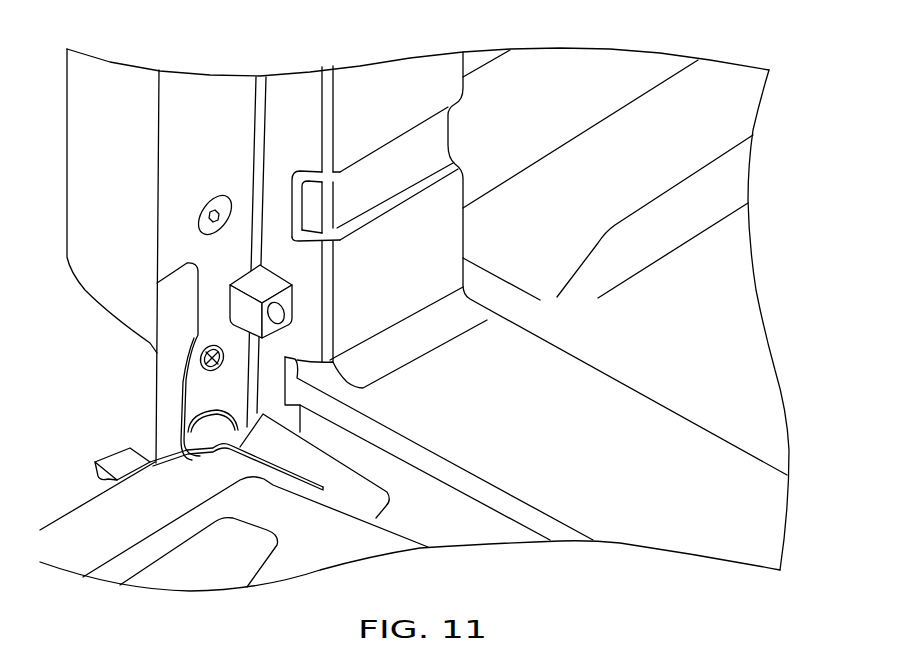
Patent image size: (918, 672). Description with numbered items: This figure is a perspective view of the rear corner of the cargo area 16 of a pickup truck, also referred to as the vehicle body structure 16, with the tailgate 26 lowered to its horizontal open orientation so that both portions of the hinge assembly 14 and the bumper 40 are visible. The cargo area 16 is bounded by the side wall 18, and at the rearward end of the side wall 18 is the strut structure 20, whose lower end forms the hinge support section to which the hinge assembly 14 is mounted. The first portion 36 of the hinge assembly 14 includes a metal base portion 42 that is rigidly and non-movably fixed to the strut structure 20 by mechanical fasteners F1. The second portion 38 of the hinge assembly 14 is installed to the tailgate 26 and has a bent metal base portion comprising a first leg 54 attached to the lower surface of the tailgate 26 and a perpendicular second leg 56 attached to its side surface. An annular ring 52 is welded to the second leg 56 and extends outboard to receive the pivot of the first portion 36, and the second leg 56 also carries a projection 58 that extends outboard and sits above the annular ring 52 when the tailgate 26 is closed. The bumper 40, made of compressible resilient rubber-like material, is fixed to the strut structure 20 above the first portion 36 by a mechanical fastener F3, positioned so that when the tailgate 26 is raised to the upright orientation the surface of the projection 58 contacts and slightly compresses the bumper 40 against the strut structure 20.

The hinge assembly 14 is at (317, 443).
The cargo area 16 is at (487, 47).
The side wall 18 is at (200, 100).
The strut structure 20 is at (222, 130).
The tailgate 26 is at (362, 537).
The first portion 36 is at (178, 407).
The second portion 38 is at (367, 478).
The bumper 40 is at (270, 282).
The base portion 42 is at (205, 390).
The annular ring 52 is at (212, 433).
The first leg 54 is at (130, 470).
The second leg 56 is at (325, 472).
The projection 58 is at (113, 455).
The mechanical fastener F1 is at (230, 318).
The mechanical fastener F3 is at (283, 316).